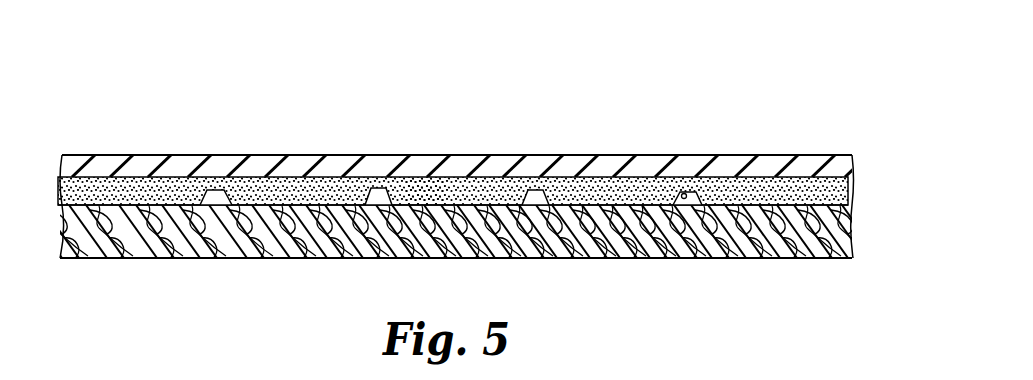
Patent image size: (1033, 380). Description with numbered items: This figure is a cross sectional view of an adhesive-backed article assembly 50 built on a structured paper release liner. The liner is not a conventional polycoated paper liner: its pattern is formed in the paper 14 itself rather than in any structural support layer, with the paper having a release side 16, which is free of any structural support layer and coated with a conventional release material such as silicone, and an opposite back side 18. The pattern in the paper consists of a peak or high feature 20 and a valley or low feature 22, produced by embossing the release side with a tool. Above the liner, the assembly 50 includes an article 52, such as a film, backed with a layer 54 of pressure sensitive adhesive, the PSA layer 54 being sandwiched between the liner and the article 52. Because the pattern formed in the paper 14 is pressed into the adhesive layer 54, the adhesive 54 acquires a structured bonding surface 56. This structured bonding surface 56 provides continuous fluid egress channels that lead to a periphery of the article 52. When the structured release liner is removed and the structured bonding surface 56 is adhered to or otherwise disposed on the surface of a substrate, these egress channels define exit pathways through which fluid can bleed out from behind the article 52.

The paper 14 is at (603, 249).
The release side 16 is at (203, 190).
The back side 18 is at (670, 260).
The peak or high feature 20 is at (379, 188).
The valley or low feature 22 is at (425, 190).
The adhesive-backed article assembly 50 is at (740, 104).
The article 52 is at (618, 165).
The layer of PSA 54 is at (774, 178).
The structured bonding surface 56 is at (686, 194).